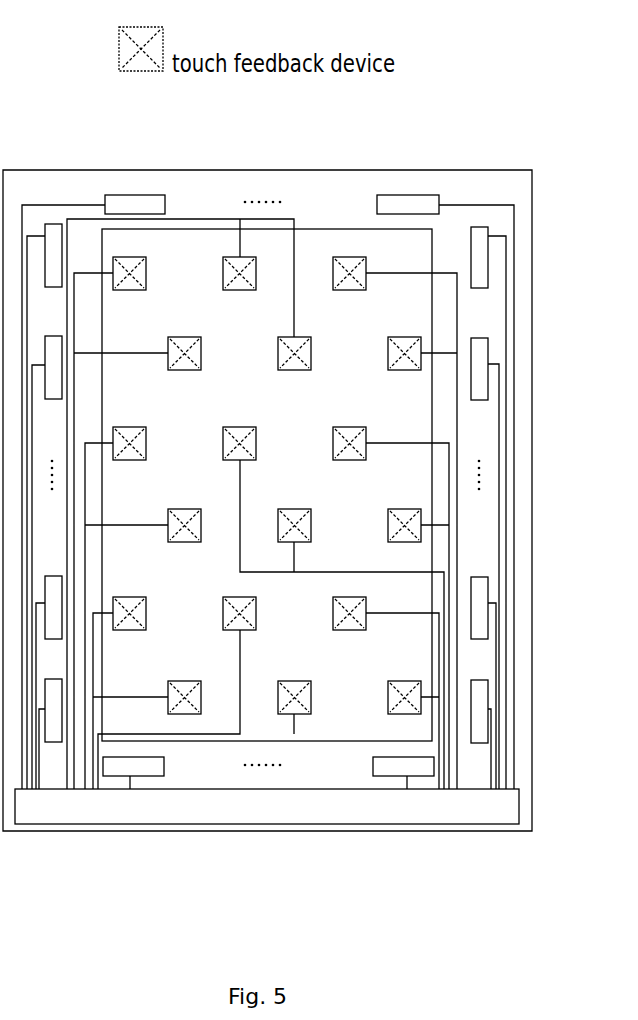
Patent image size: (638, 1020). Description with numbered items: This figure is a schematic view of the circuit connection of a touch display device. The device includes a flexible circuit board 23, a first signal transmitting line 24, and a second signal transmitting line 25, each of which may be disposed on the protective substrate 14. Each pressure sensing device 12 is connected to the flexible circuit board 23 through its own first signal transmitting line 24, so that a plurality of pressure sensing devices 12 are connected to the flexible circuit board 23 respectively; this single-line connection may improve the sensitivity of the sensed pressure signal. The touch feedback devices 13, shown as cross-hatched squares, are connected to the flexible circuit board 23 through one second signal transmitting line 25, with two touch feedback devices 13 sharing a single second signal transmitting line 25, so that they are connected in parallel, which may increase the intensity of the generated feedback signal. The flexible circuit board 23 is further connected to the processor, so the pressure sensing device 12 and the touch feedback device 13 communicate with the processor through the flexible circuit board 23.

The pressure sensing device 12 is at (418, 210).
The touch feedback device 13 is at (350, 267).
The protective substrate 14 is at (67, 187).
The flexible circuit board 23 is at (238, 811).
The first signal transmitting line 24 is at (496, 205).
The second signal transmitting line 25 is at (205, 219).